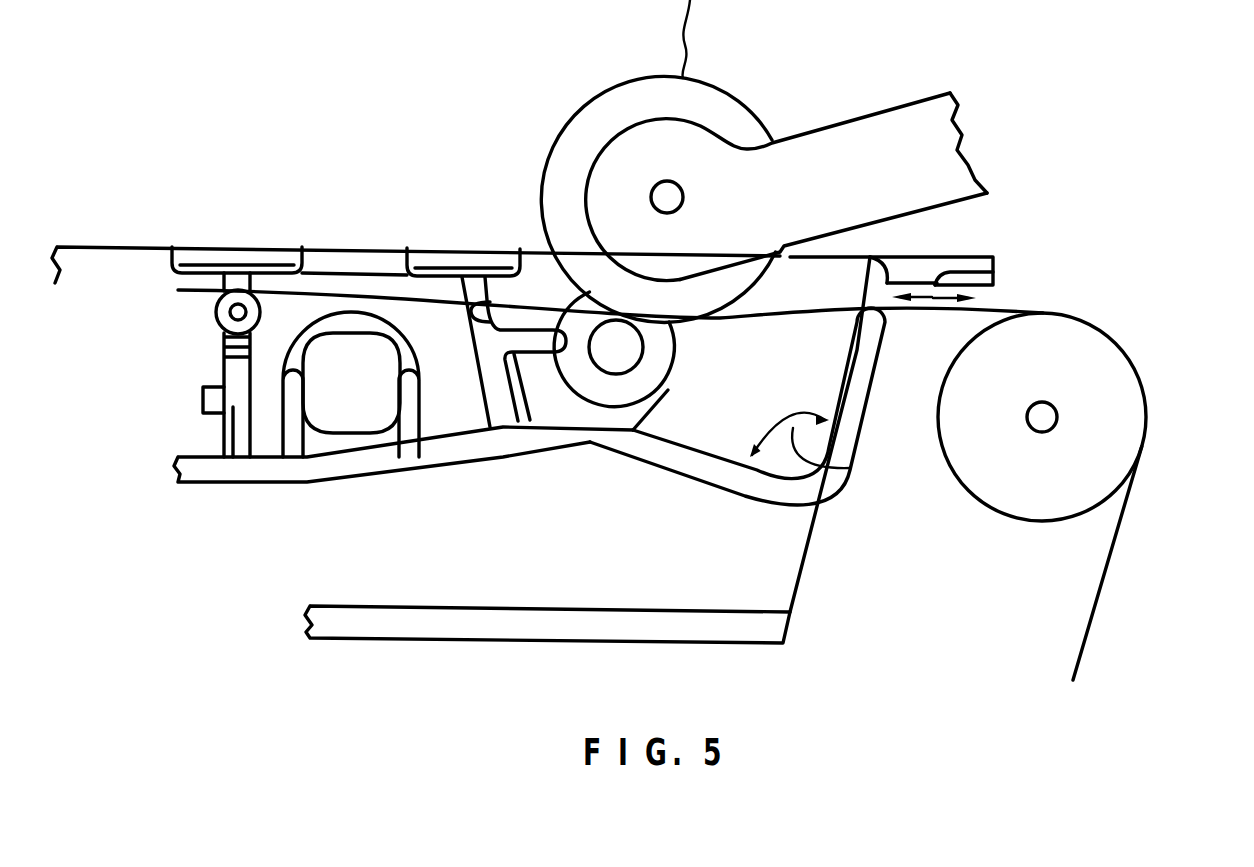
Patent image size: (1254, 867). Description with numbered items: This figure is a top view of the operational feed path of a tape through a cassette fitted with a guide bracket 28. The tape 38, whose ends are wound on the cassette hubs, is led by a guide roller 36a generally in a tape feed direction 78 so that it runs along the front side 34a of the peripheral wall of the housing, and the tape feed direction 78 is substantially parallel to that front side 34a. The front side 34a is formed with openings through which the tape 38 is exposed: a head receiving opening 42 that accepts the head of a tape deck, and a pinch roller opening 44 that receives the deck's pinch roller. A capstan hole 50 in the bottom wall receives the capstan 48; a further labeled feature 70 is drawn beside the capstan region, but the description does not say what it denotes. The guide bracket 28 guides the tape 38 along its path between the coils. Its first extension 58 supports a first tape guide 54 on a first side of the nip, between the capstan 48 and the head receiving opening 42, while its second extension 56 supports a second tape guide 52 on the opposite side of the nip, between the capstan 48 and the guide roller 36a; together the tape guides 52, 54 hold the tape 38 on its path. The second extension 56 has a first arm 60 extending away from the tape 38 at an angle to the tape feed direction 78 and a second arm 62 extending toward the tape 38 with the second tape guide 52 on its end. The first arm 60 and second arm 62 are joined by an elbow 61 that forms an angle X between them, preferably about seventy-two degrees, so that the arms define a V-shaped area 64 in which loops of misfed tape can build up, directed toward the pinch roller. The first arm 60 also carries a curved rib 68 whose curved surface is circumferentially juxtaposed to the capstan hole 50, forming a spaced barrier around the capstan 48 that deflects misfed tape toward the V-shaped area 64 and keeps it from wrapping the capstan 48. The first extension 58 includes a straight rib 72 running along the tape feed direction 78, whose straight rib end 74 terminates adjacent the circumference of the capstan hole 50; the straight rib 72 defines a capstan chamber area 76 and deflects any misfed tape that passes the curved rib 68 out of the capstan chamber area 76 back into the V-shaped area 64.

The guide bracket 28 is at (394, 492).
The front side of peripheral wall 34a is at (93, 247).
The guide roller 36a is at (1113, 368).
The tape 38 is at (827, 300).
The head receiving opening 42 is at (352, 250).
The pinch roller opening 44 is at (536, 240).
The capstan 48 is at (611, 383).
The capstan hole 50 is at (705, 333).
The second tape guide 52 is at (877, 313).
The first tape guide 54 is at (478, 300).
The second extension 56 is at (738, 512).
The first extension 58 is at (463, 365).
The first arm 60 is at (695, 477).
The elbow 61 is at (832, 500).
The second arm 62 is at (870, 395).
The V-shaped area 64 is at (783, 410).
The curved rib 68 is at (683, 404).
The bearing 70 is at (700, 360).
The straight rib 72 is at (520, 362).
The straight rib end 74 is at (557, 330).
The capstan chamber area 76 is at (537, 394).
The tape feed direction 78 is at (995, 272).
The angle X is at (848, 468).